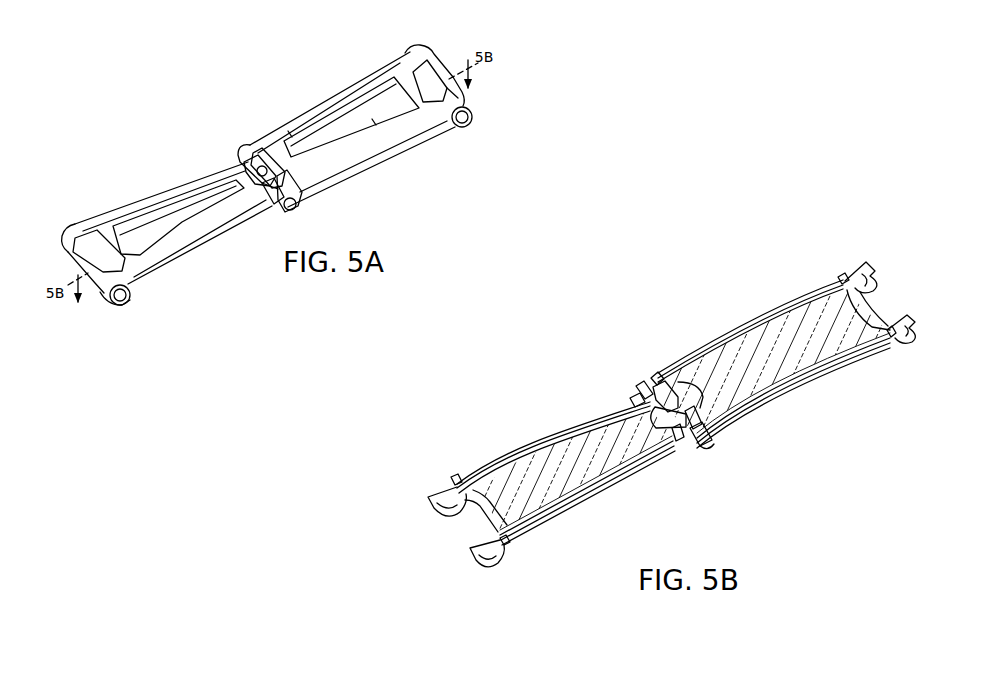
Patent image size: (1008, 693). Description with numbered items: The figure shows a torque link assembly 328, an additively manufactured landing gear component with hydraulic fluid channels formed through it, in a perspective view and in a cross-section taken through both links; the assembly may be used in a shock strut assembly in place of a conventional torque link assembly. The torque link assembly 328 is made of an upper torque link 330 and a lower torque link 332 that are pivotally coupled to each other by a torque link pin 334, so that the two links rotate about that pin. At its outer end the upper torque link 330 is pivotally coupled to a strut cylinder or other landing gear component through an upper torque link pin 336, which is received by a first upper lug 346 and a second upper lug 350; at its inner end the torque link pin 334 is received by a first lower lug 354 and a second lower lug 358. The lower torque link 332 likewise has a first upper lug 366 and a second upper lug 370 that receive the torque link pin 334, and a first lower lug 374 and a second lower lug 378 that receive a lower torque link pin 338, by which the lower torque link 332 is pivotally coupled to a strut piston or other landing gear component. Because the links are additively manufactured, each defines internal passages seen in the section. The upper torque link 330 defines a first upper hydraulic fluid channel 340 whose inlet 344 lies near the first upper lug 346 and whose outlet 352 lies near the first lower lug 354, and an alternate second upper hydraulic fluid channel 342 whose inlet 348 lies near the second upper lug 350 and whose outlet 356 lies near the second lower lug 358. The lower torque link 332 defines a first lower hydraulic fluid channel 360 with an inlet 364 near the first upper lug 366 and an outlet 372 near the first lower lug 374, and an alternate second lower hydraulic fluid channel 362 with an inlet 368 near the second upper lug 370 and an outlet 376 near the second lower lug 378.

In FIG. 5A, the torque link assembly 328 is at (111, 96).
In FIG. 5B, the torque link assembly 328 is at (701, 288).
In FIG. 5A, the upper torque link 330 is at (378, 111).
In FIG. 5B, the upper torque link 330 is at (783, 392).
In FIG. 5A, the lower torque link 332 is at (142, 251).
In FIG. 5B, the lower torque link 332 is at (613, 430).
In FIG. 5A, the torque link pin 334 is at (298, 206).
In FIG. 5A, the upper torque link pin 336 is at (467, 126).
In FIG. 5A, the lower torque link pin 338 is at (127, 303).
In FIG. 5B, the first upper hydraulic fluid channel 340 is at (690, 358).
In FIG. 5B, the second upper hydraulic fluid channel 342 is at (790, 396).
In FIG. 5B, the inlet 344 is at (838, 274).
In FIG. 5A, the first upper lug 346 is at (425, 46).
In FIG. 5B, the first upper lug 346 is at (864, 268).
In FIG. 5B, the inlet 348 is at (891, 343).
In FIG. 5A, the second upper lug 350 is at (469, 98).
In FIG. 5B, the second upper lug 350 is at (908, 326).
In FIG. 5B, the outlet 352 is at (656, 371).
In FIG. 5A, the first lower lug 354 is at (263, 137).
In FIG. 5B, the first lower lug 354 is at (646, 383).
In FIG. 5B, the outlet 356 is at (712, 436).
In FIG. 5A, the second lower lug 358 is at (294, 183).
In FIG. 5B, the second lower lug 358 is at (704, 450).
In FIG. 5B, the first lower hydraulic fluid channel 360 is at (562, 436).
In FIG. 5B, the second lower hydraulic fluid channel 362 is at (630, 470).
In FIG. 5B, the inlet 364 is at (642, 400).
In FIG. 5A, the first upper lug 366 is at (246, 168).
In FIG. 5B, the first upper lug 366 is at (699, 397).
In FIG. 5B, the inlet 368 is at (676, 442).
In FIG. 5A, the second upper lug 370 is at (267, 192).
In FIG. 5B, the second upper lug 370 is at (712, 418).
In FIG. 5B, the outlet 372 is at (455, 474).
In FIG. 5A, the first lower lug 374 is at (68, 238).
In FIG. 5B, the first lower lug 374 is at (439, 495).
In FIG. 5B, the outlet 376 is at (509, 546).
In FIG. 5A, the second lower lug 378 is at (101, 298).
In FIG. 5B, the second lower lug 378 is at (493, 556).